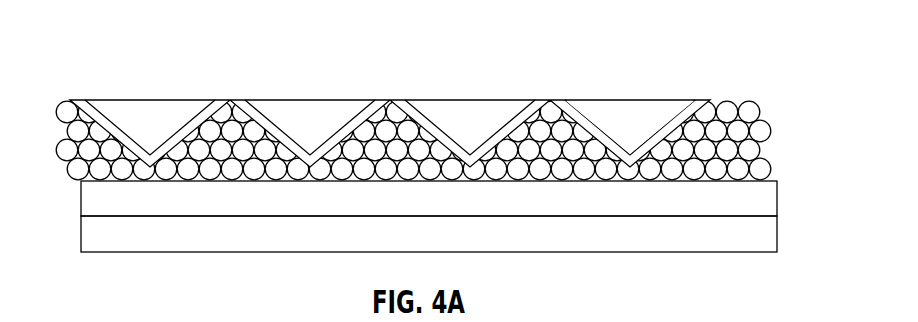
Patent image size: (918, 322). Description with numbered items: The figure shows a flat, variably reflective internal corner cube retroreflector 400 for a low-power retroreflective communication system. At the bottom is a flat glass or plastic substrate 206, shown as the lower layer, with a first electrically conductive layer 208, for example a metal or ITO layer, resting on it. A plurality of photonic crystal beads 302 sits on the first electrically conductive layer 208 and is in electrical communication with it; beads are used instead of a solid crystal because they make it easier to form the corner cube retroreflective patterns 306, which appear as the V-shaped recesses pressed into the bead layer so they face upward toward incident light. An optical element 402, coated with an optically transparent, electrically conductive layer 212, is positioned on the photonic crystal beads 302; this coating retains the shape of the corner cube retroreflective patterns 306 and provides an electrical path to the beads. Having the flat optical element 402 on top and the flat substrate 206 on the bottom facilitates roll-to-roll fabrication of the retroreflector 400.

The flat variably reflective internal corner cube retroreflector 400 is at (119, 43).
The optical element 402 is at (472, 113).
The corner cube retroreflective patterns 306 is at (628, 131).
The second optically transparent electrically conductive layer 212 is at (701, 100).
The photonic crystal beads 302 is at (772, 132).
The first electrically conductive layer 208 is at (777, 198).
The glass or plastic substrate 206 is at (777, 233).